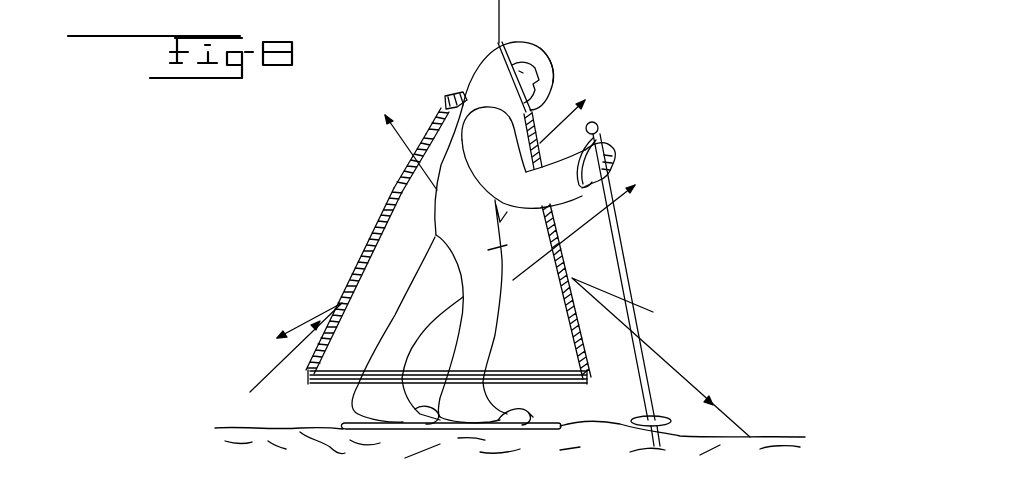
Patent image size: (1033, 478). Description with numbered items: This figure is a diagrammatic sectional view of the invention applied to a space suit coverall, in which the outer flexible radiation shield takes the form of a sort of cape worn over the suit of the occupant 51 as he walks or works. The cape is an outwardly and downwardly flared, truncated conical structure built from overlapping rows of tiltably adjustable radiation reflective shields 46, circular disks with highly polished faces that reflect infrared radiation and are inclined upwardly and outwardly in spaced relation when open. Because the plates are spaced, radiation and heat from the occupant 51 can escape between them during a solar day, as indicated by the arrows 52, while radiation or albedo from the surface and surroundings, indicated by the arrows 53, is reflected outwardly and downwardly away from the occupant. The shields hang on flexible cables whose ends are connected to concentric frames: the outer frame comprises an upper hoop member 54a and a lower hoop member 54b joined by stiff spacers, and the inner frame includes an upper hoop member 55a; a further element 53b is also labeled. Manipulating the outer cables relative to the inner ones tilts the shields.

The radiation reflective shields 46 is at (380, 210).
The occupant 51 is at (490, 249).
The arrows indicating escaping radiation and heat 52 is at (392, 136).
The arrows indicating albedo radiation 53 is at (297, 323).
The lower rope end 53b is at (529, 370).
The upper hoop member of outer frame 54a is at (459, 92).
The lower hoop member of outer frame 54b is at (546, 384).
The upper hoop member of inner frame 55a is at (438, 112).